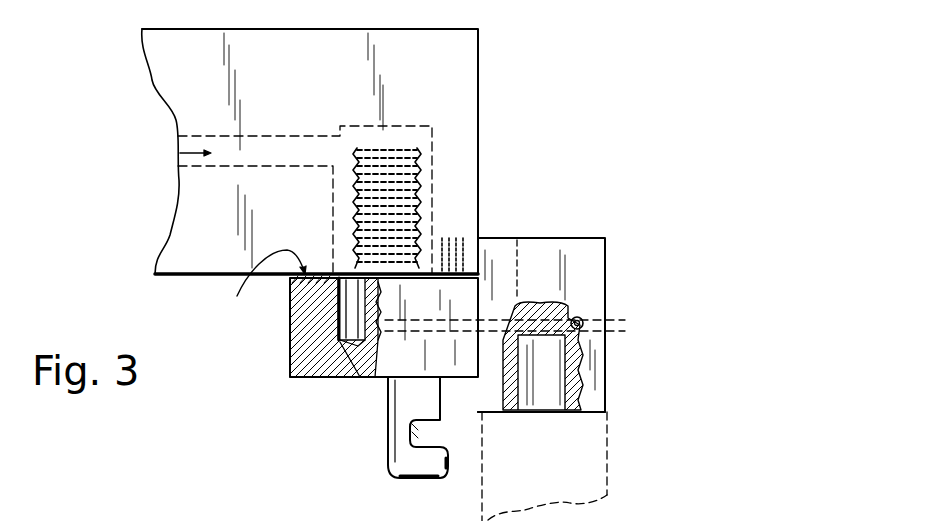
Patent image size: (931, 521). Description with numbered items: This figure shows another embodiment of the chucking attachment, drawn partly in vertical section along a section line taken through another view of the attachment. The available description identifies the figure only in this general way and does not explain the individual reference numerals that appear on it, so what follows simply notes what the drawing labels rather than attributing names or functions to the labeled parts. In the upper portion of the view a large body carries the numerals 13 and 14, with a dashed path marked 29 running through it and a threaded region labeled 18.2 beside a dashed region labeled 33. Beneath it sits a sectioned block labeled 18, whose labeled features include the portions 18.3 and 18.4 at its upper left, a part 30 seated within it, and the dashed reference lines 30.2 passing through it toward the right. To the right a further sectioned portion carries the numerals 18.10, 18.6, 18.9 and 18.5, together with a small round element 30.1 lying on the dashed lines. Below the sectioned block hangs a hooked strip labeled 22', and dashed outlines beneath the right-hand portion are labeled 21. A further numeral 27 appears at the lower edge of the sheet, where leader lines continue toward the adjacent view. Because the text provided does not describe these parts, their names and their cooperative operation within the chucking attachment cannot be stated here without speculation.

The wall 13 is at (283, 29).
The housing 14 is at (478, 43).
The slide block 18 is at (270, 384).
The threaded bore 18.2 is at (434, 153).
The recess 18.3 is at (254, 283).
The sealing strip 18.4 is at (290, 282).
The side wall 18.5 is at (667, 364).
The bore 18.6 is at (548, 273).
The end face 18.9 is at (610, 358).
The flange 18.10 is at (605, 238).
The frame 21 is at (608, 458).
The hook strip 22' is at (389, 428).
The element 27 is at (239, 516).
The flow path 29 is at (176, 152).
The pin 30 is at (343, 378).
The ball 30.1 is at (584, 320).
The axis 30.2 is at (607, 325).
The seal 33 is at (452, 236).